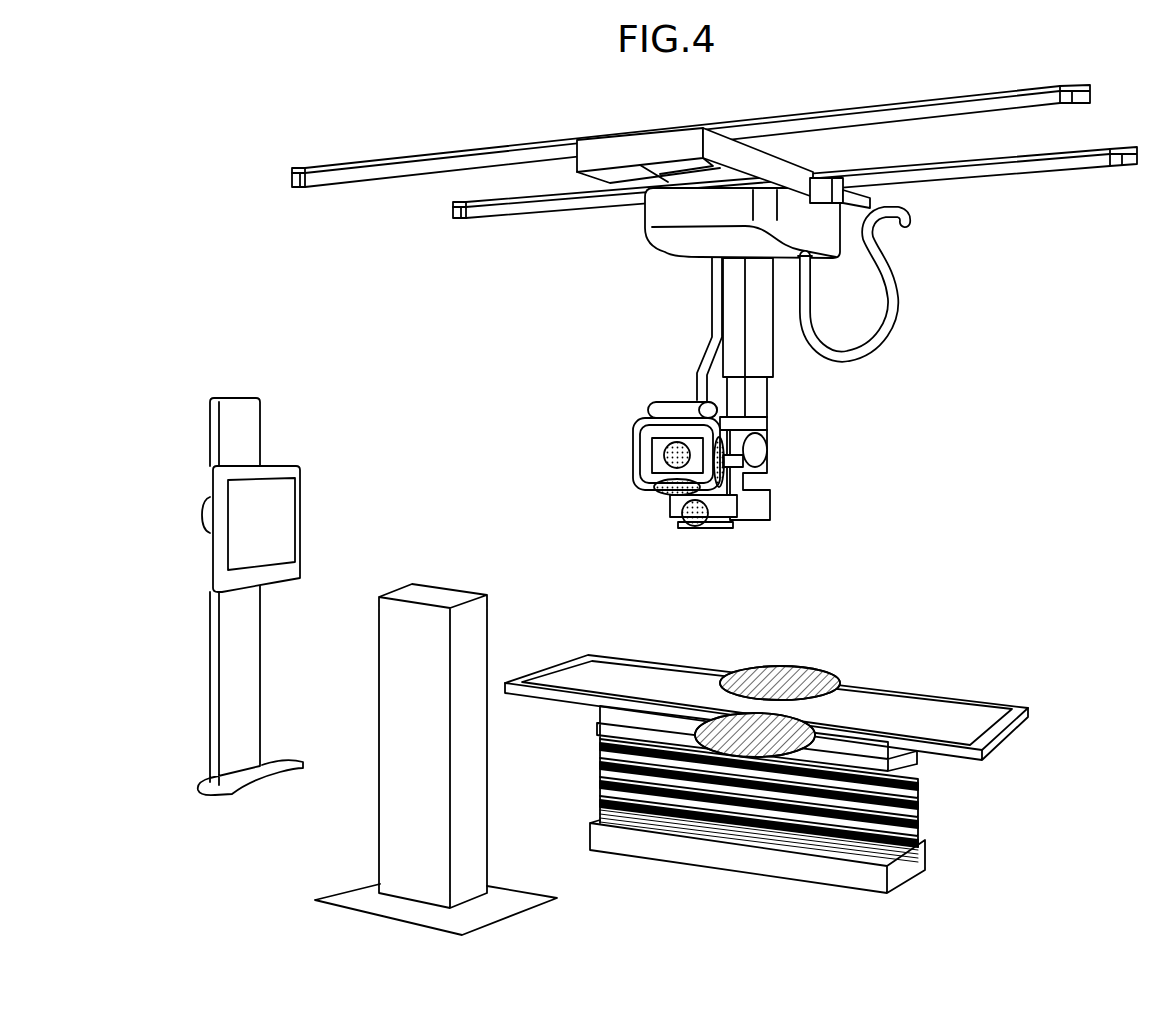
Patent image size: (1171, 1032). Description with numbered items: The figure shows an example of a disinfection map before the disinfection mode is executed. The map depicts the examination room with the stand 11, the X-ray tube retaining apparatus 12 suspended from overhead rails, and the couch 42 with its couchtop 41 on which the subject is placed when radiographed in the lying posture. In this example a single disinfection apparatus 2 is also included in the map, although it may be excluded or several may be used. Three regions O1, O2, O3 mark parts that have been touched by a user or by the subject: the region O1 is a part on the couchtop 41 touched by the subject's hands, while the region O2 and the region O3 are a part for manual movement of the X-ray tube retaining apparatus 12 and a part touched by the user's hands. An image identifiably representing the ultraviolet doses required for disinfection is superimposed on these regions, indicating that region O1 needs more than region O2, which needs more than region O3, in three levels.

The stand 11 is at (250, 420).
The X-ray tube retaining apparatus 12 is at (692, 498).
The disinfection apparatus 2 is at (402, 822).
The couchtop 41 is at (992, 710).
The couch 42 is at (918, 792).
The region O1 is at (820, 667).
The region O2 is at (655, 502).
The region O3 is at (695, 526).